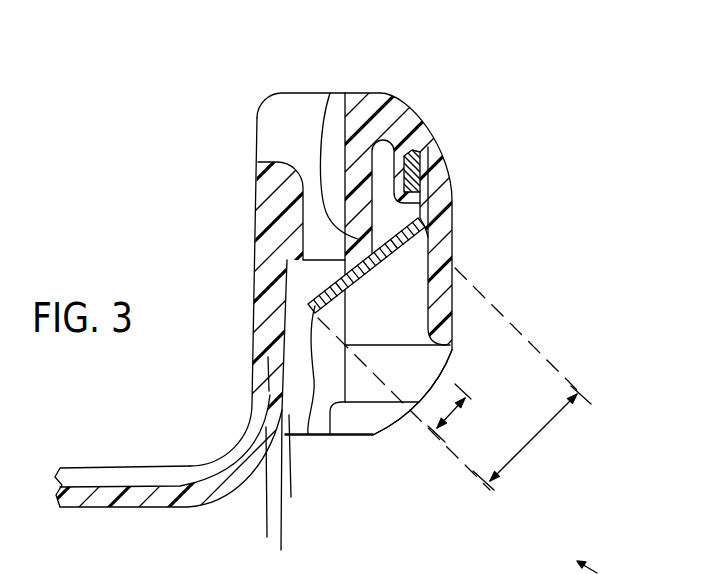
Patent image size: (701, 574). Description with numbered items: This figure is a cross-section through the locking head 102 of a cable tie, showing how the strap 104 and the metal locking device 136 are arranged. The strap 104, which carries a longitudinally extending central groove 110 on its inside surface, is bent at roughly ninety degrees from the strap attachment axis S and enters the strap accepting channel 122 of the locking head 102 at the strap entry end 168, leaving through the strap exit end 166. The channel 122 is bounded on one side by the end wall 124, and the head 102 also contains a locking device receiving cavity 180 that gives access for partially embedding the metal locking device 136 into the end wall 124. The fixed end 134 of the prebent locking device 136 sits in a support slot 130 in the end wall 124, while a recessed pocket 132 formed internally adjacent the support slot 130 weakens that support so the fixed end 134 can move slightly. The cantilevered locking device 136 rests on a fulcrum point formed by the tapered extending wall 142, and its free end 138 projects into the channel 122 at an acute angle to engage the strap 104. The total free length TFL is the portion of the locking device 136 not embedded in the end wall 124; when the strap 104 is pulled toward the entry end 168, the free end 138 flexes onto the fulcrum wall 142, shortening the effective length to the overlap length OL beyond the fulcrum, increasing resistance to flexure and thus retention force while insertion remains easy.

The locking head 102 is at (450, 222).
The strap 104 is at (128, 498).
The central groove 110 is at (112, 474).
The strap accepting channel 122 is at (294, 417).
The end wall 124 is at (447, 193).
The support slot 130 is at (410, 178).
The recessed pocket 132 is at (381, 158).
The fixed end 134 is at (421, 151).
The metal locking device 136 is at (373, 263).
The free end 138 is at (308, 434).
The extending wall 142 is at (337, 118).
The strap exit end 166 is at (326, 450).
The strap entry end 168 is at (277, 83).
The locking device receiving cavity 180 is at (389, 437).
The strap attachment axis S is at (266, 514).
The overlap length OL is at (451, 413).
The total free length TFL is at (531, 437).